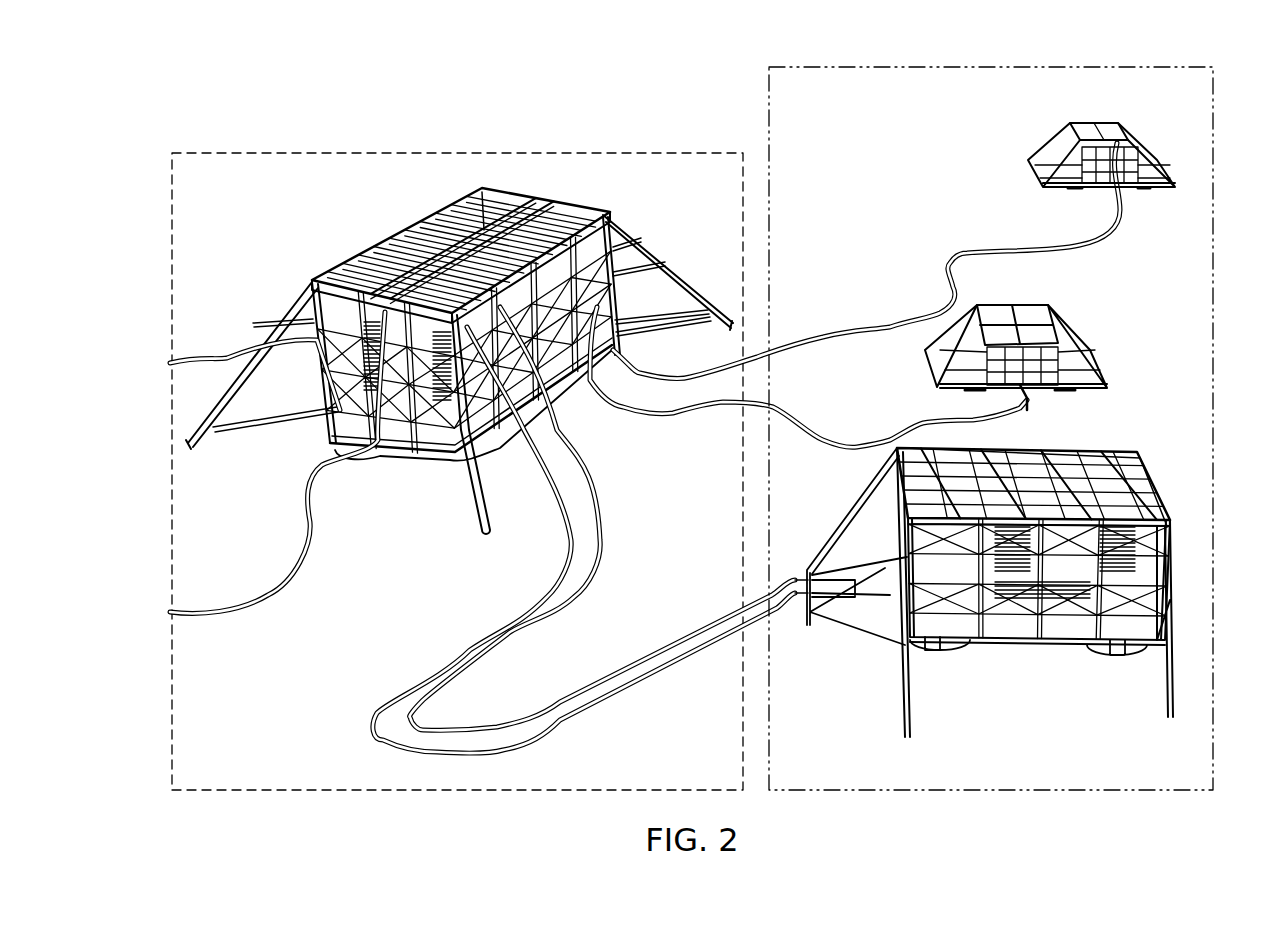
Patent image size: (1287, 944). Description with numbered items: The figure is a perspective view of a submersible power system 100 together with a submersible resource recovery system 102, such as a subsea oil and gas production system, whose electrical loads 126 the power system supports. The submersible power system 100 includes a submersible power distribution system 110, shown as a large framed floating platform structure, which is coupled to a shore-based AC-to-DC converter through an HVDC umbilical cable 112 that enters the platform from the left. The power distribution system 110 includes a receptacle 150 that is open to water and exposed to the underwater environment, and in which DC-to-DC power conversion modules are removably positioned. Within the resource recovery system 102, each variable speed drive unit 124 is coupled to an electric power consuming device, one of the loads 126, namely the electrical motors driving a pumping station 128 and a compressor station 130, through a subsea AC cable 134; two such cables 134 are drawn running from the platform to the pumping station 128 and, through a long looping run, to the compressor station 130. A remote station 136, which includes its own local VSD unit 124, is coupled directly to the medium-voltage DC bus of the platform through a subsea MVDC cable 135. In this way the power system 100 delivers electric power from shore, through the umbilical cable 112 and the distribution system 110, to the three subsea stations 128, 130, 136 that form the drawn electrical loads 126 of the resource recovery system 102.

The submersible power system 100 is at (478, 122).
The submersible resource recovery system 102 is at (848, 80).
The submersible power distribution system 110 is at (459, 361).
The HVDC umbilical cable 112 is at (227, 356).
The variable speed drive unit 124 is at (1152, 145).
The electrical loads 126 is at (1034, 406).
The pumping station 128 is at (1055, 320).
The compressor station 130 is at (1145, 456).
The subsea AC cable 134 is at (715, 410).
The subsea MVDC cable 135 is at (812, 332).
The remote station 136 is at (1144, 132).
The receptacle 150 is at (410, 436).